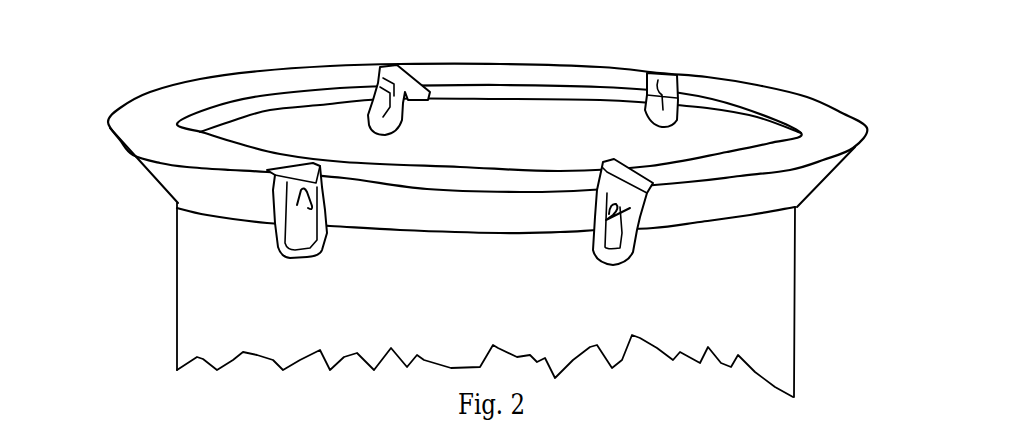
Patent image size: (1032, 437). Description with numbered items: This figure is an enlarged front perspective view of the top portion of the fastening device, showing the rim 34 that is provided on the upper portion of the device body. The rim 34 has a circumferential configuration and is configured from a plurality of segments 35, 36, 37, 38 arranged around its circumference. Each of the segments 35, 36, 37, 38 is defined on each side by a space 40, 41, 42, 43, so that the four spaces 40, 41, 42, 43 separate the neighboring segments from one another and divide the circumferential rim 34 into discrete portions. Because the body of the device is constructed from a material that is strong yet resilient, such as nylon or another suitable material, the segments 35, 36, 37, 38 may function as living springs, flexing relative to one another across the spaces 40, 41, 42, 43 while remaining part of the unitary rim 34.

The rim 34 is at (130, 100).
The segment 35 is at (787, 180).
The segment 36 is at (472, 210).
The segment 37 is at (187, 168).
The segment 38 is at (563, 79).
The space 40 is at (605, 217).
The space 41 is at (313, 186).
The space 42 is at (379, 67).
The space 43 is at (665, 73).